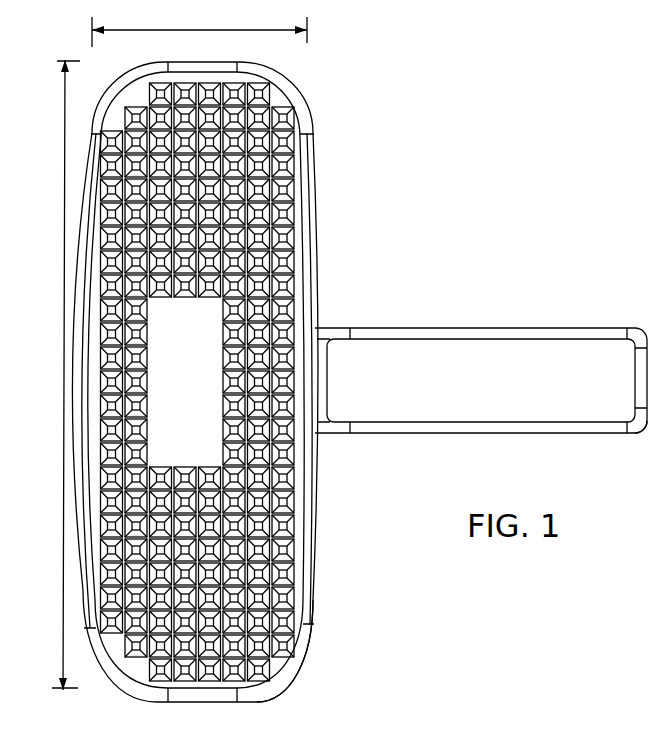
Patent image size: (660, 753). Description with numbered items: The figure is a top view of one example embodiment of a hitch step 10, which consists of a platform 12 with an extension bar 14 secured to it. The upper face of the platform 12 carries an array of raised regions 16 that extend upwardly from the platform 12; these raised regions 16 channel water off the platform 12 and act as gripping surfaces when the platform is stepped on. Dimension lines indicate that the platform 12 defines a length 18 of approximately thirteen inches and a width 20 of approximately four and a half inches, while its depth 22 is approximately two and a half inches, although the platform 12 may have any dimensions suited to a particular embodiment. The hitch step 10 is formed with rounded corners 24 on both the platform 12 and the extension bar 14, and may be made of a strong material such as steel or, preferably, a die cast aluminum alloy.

The hitch step 10 is at (446, 237).
The platform 12 is at (293, 208).
The extension bar 14 is at (467, 350).
The raised regions 16 is at (290, 257).
The length 18 is at (67, 97).
The width 20 is at (278, 32).
The depth 22 is at (649, 141).
The rounded corners 24 is at (643, 434).